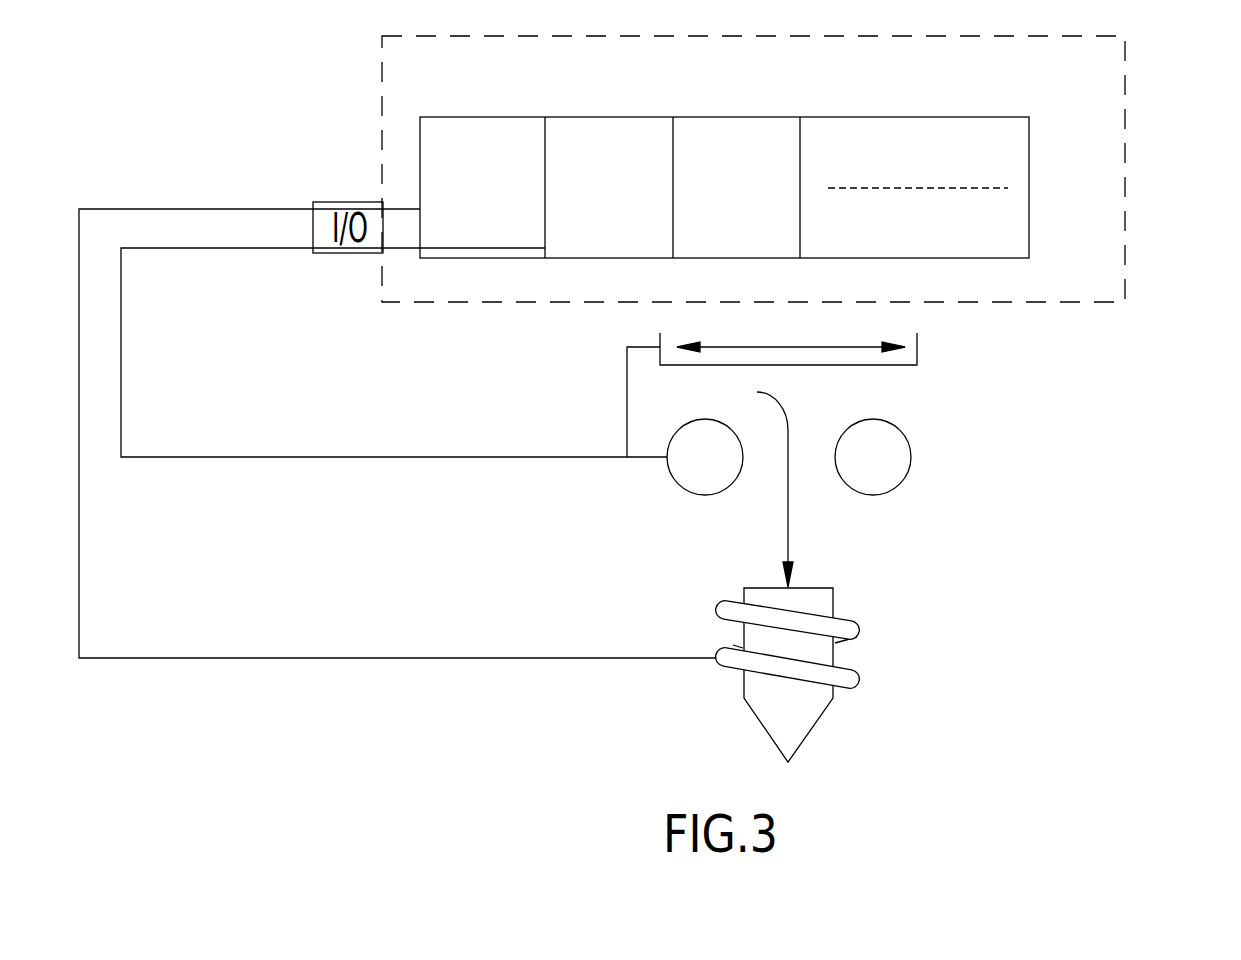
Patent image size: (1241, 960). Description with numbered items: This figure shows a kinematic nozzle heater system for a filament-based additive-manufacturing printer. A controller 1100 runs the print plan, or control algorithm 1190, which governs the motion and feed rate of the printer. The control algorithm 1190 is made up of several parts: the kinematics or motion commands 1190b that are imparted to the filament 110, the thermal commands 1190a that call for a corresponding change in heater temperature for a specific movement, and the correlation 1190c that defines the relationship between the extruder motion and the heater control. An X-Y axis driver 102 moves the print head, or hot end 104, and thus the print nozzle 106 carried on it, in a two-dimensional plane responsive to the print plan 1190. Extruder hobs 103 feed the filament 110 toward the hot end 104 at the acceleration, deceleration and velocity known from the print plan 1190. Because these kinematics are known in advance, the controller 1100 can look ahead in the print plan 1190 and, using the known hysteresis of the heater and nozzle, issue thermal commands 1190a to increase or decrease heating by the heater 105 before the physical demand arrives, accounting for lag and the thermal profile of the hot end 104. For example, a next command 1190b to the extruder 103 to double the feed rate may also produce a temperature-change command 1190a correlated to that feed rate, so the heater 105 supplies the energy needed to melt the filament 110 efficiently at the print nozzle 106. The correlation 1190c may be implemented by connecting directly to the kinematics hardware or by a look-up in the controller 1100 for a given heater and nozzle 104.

The controller 1100 is at (1125, 36).
The print plan/control algorithm 1190 is at (814, 177).
The thermal commands 1190a is at (496, 187).
The kinematics/motion commands 1190b is at (624, 187).
The correlation 1190c is at (752, 187).
The X-Y axis driver 102 is at (917, 349).
The hobs 103 is at (909, 443).
The filament 110 is at (788, 531).
The print head (hot end) 104 is at (876, 668).
The heater 105 is at (832, 644).
The print nozzle 106 is at (833, 597).